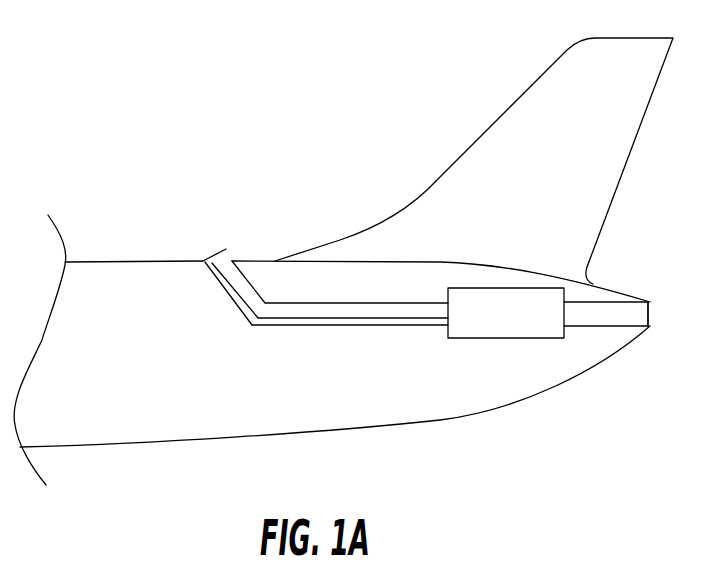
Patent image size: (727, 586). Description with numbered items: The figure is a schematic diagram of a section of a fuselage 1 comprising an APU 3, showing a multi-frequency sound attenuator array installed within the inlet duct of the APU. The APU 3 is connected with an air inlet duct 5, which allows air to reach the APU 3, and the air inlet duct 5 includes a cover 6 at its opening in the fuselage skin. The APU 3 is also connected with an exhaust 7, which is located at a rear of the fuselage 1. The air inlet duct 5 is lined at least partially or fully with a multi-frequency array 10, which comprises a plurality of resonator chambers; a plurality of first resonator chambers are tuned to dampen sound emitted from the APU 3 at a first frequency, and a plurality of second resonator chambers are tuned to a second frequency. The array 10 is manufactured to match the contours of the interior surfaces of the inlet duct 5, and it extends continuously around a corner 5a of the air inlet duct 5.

The fuselage 1 is at (166, 160).
The APU 3 is at (515, 323).
The air inlet duct 5 is at (244, 277).
The corner 5a is at (250, 326).
The cover 6 is at (217, 254).
The exhaust 7 is at (624, 315).
The multi-frequency array 10 is at (280, 324).